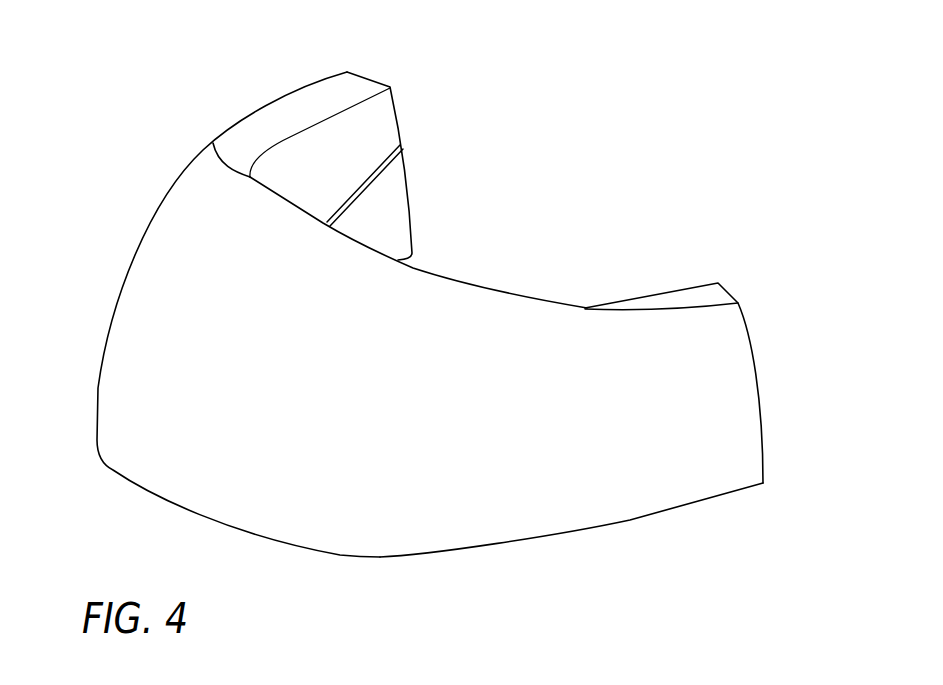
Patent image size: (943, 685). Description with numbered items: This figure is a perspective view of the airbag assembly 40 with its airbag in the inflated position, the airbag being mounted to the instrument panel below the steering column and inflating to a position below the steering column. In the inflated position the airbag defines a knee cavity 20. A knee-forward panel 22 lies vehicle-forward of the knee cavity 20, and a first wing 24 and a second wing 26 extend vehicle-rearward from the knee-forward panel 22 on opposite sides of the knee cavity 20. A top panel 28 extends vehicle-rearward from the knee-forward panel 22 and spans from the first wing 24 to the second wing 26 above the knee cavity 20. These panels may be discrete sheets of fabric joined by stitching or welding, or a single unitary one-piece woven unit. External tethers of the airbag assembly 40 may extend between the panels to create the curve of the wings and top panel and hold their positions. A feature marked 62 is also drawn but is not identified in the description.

The knee cavity 20 is at (475, 280).
The knee-forward panel 22 is at (190, 345).
The first wing 24 is at (738, 387).
The second wing 26 is at (372, 125).
The top panel 28 is at (300, 207).
The airbag assembly 40 is at (697, 503).
The groove 62 is at (362, 190).